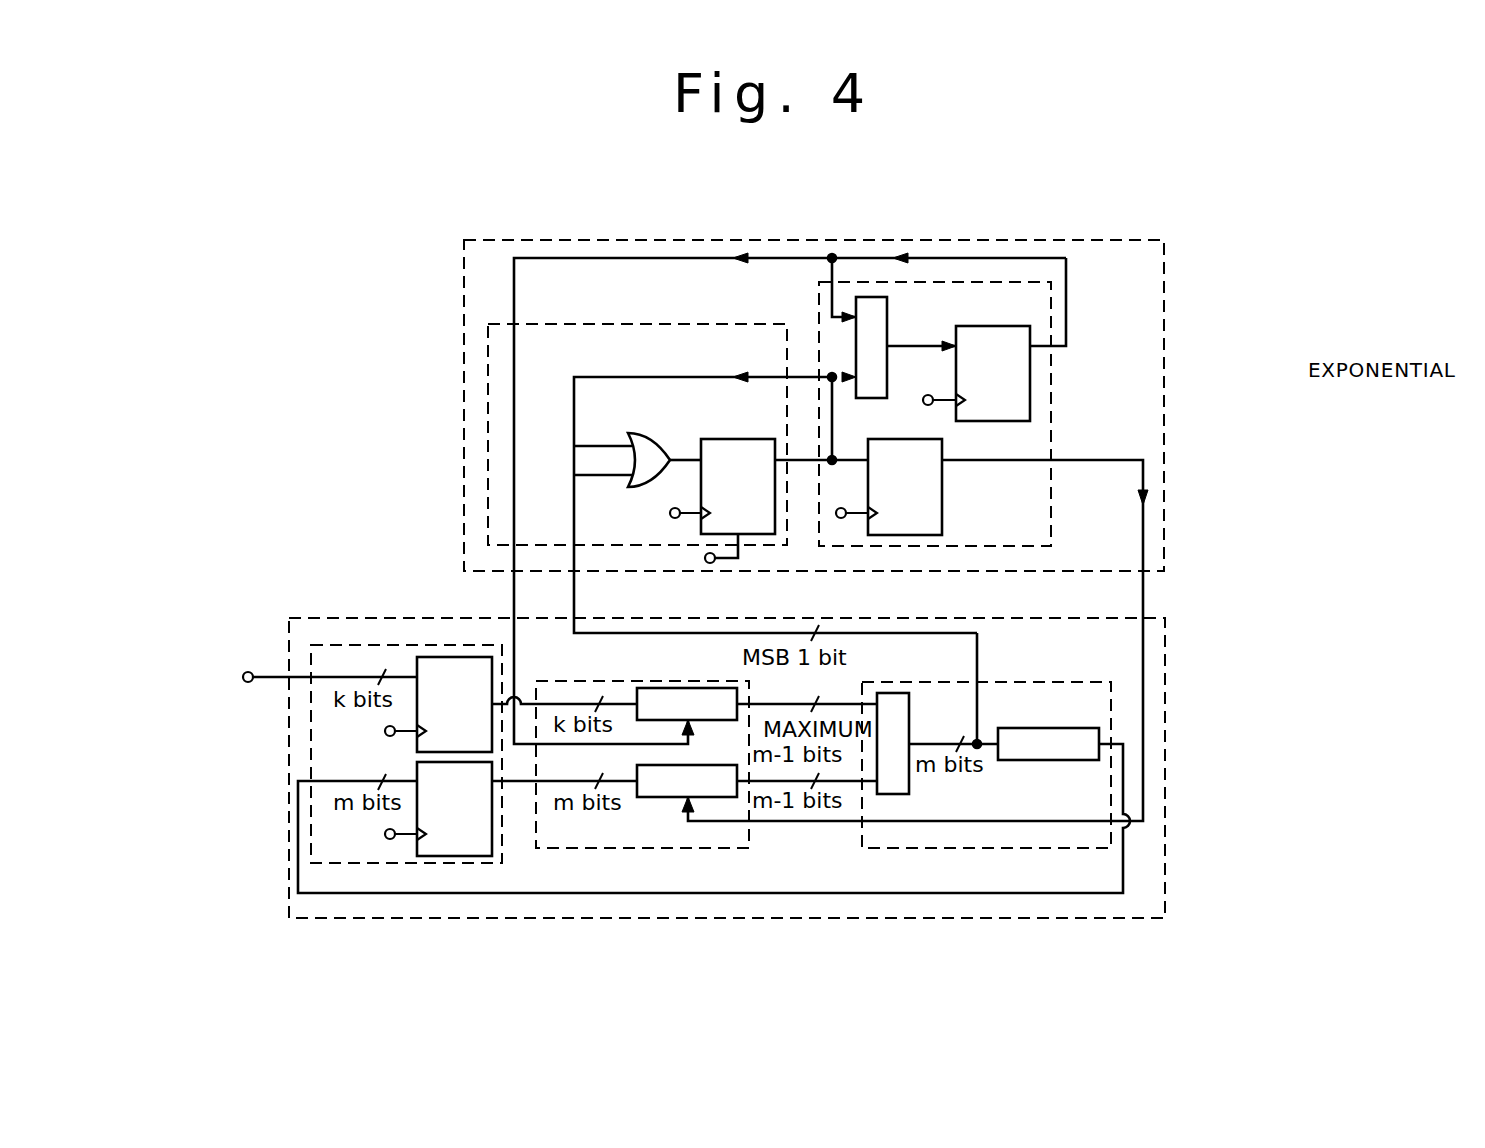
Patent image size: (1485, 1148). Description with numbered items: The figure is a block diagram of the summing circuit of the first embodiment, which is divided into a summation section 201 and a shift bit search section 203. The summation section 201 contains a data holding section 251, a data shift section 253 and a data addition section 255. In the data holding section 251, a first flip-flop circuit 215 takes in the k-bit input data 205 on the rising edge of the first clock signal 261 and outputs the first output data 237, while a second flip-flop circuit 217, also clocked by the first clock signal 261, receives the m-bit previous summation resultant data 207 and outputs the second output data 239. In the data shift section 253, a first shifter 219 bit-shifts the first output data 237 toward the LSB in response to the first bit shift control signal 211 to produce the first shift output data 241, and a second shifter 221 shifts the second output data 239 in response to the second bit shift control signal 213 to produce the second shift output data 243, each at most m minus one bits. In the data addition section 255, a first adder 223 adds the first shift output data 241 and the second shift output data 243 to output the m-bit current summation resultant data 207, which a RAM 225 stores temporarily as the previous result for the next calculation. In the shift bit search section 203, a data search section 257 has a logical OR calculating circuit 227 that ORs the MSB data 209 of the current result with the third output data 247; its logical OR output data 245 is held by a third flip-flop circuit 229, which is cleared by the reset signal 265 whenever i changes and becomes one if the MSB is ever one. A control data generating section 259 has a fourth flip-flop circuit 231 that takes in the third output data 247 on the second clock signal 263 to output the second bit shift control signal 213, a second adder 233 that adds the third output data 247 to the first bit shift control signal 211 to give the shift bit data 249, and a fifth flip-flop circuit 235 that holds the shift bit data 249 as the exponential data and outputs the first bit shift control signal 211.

The summation section 201 is at (340, 618).
The shift bit search section 203 is at (1164, 302).
The k-bit input data 205 is at (258, 672).
The summation resultant data 207 is at (988, 740).
The MSB data 209 is at (977, 660).
The first bit shift control signal 211 is at (650, 258).
The second bit shift control signal 213 is at (1095, 460).
The first flip-flop circuit 215 is at (446, 657).
The second flip-flop circuit 217 is at (448, 856).
The first shifter 219 is at (672, 688).
The second shifter 221 is at (660, 797).
The first adder 223 is at (892, 794).
The RAM 225 is at (1040, 760).
The logical OR calculating circuit 227 is at (635, 432).
The third flip-flop circuit 229 is at (738, 439).
The fourth flip-flop circuit 231 is at (942, 498).
The second adder 233 is at (872, 297).
The fifth flip-flop circuit 235 is at (1030, 380).
The first output data 237 is at (567, 702).
The second output data 239 is at (520, 783).
The first shift output data 241 is at (840, 700).
The second shift output data 243 is at (750, 787).
The logical OR output data 245 is at (690, 457).
The third output data 247 is at (800, 470).
The shift bit data 249 is at (912, 346).
The data holding section 251 is at (311, 745).
The data shift section 253 is at (590, 848).
The data addition section 255 is at (986, 848).
The data search section 257 is at (488, 362).
The control data generating section 259 is at (1000, 282).
The first clock signal 261 is at (385, 731).
The second clock signal 263 is at (926, 395).
The reset signal 265 is at (705, 562).